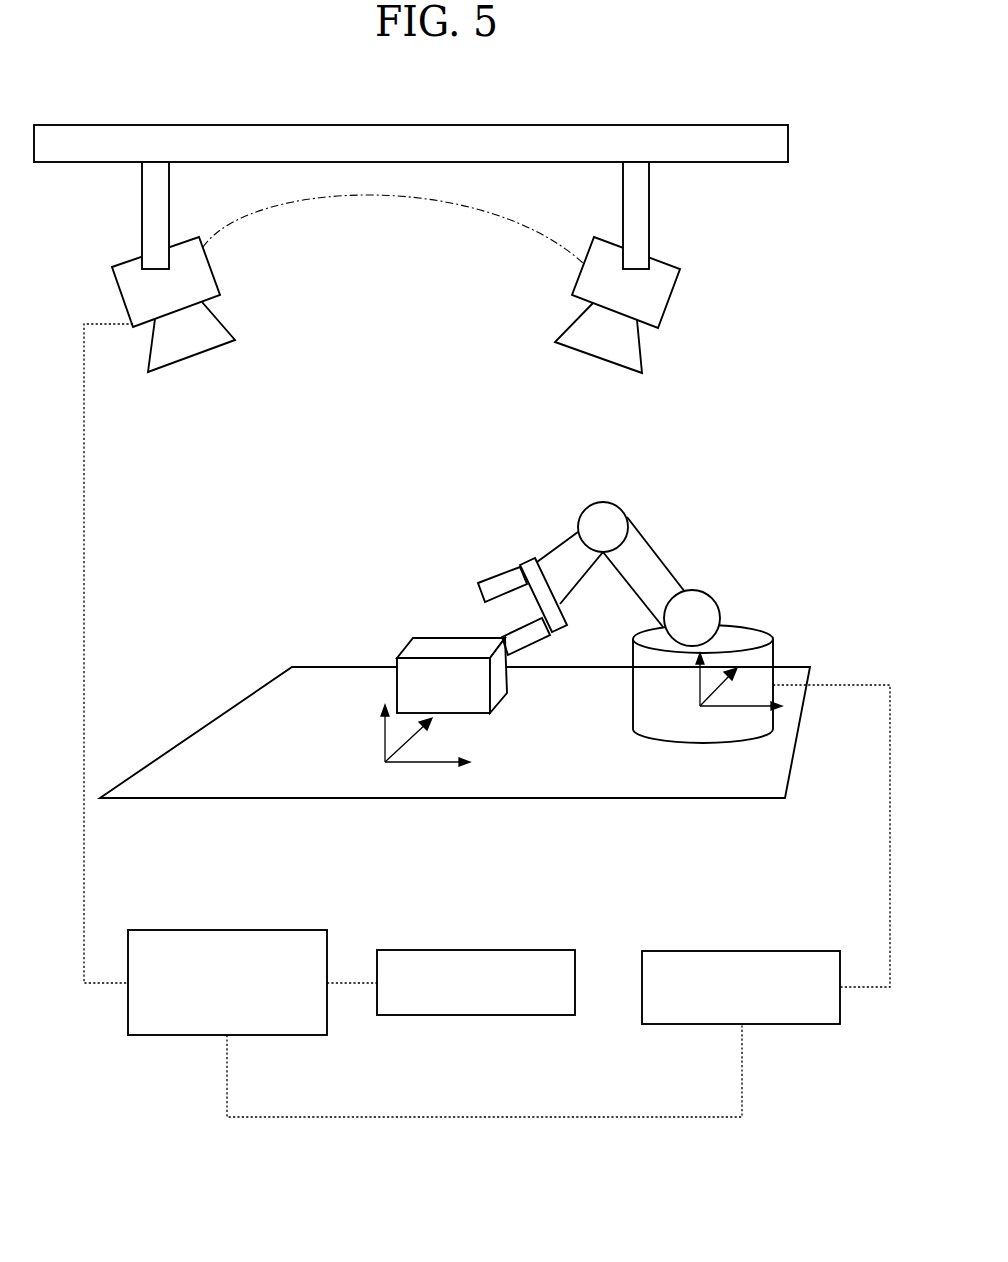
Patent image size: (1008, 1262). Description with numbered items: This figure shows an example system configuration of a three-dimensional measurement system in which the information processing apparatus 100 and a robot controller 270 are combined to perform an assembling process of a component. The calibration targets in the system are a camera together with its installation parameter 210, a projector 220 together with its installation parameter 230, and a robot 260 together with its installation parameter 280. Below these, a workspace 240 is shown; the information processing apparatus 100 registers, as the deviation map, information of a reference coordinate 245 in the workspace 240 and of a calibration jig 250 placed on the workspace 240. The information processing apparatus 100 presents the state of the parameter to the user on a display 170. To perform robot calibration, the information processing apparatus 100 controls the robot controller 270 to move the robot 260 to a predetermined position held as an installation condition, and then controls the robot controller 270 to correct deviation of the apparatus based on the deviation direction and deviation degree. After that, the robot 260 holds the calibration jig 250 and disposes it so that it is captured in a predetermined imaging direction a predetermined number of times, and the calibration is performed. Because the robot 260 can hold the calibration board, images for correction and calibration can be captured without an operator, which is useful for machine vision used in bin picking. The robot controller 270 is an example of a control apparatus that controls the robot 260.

The information processing apparatus 100 is at (250, 930).
The display 170 is at (480, 950).
The installation parameter of the camera 210 is at (203, 273).
The projector 220 is at (205, 318).
The installation parameter of the projector 230 is at (660, 295).
The workspace 240 is at (198, 742).
The reference coordinate 245 is at (403, 762).
The calibration jig 250 is at (438, 645).
The robot 260 is at (695, 598).
The robot controller 270 is at (758, 951).
The installation parameter of the robot 280 is at (723, 708).